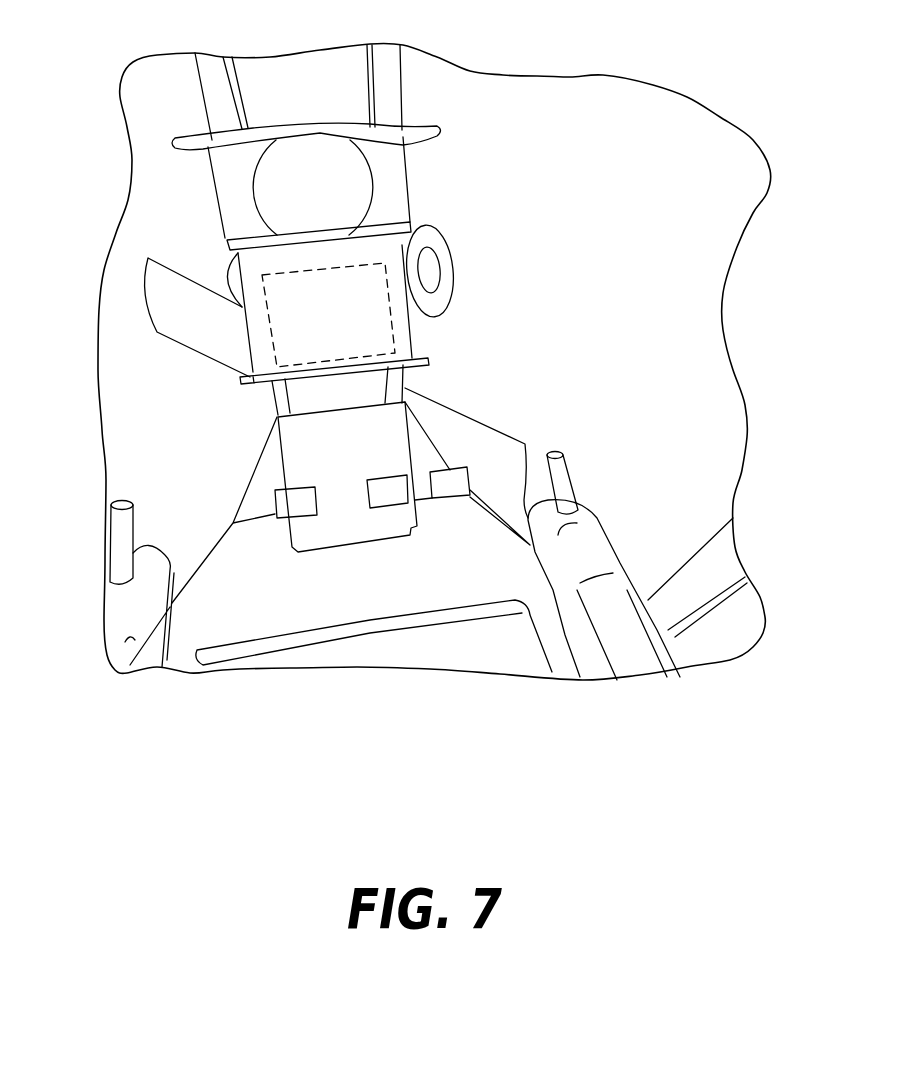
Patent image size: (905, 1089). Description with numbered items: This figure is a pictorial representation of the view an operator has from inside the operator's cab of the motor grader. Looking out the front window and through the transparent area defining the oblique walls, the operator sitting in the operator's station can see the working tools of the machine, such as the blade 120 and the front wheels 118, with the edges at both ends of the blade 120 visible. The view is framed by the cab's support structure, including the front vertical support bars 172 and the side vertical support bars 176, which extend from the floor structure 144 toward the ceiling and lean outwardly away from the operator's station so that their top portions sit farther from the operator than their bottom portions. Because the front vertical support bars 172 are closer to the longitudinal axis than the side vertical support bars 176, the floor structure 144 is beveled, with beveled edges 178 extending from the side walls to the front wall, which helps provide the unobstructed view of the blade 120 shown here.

The front wheels 118 is at (453, 249).
The blade 120 is at (165, 320).
The floor structure 144 is at (202, 590).
The front vertical support bars 172 is at (377, 72).
The side vertical support bars 176 is at (725, 562).
The beveled edges 178 is at (234, 522).